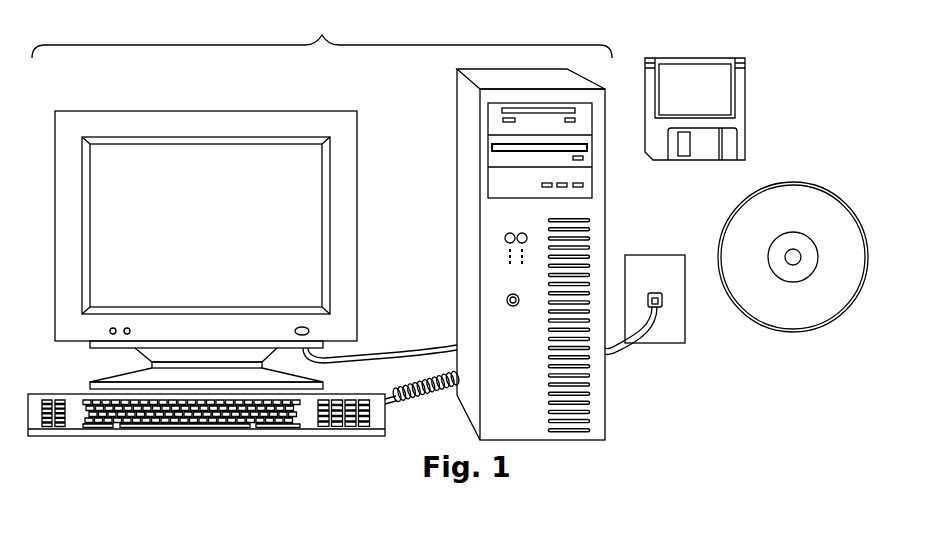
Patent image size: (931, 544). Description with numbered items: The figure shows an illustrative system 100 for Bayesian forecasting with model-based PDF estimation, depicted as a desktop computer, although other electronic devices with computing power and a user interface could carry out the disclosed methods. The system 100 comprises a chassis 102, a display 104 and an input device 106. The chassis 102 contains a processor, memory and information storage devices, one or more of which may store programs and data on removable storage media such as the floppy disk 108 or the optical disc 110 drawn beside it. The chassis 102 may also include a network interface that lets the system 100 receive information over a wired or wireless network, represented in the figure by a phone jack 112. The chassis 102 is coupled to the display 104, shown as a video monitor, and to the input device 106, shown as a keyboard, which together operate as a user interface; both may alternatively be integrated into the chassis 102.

The system 100 is at (322, 34).
The chassis 102 is at (457, 292).
The display 104 is at (76, 341).
The input device 106 is at (71, 436).
The floppy disk 108 is at (745, 140).
The optical disc 110 is at (803, 183).
The phone jack 112 is at (647, 255).